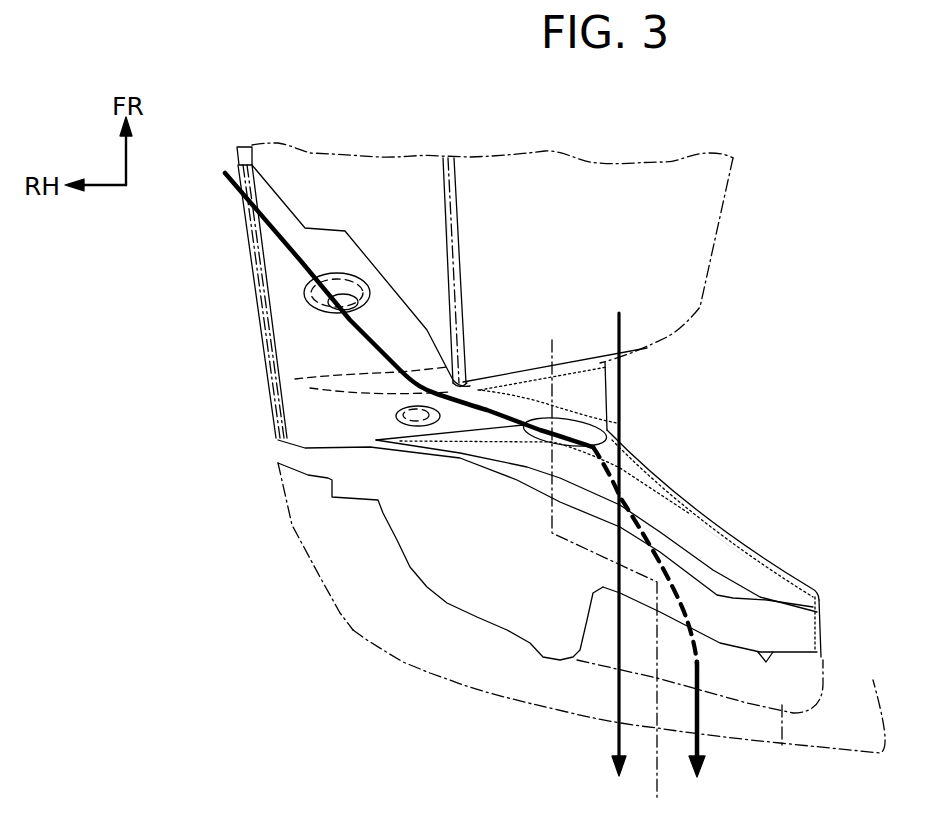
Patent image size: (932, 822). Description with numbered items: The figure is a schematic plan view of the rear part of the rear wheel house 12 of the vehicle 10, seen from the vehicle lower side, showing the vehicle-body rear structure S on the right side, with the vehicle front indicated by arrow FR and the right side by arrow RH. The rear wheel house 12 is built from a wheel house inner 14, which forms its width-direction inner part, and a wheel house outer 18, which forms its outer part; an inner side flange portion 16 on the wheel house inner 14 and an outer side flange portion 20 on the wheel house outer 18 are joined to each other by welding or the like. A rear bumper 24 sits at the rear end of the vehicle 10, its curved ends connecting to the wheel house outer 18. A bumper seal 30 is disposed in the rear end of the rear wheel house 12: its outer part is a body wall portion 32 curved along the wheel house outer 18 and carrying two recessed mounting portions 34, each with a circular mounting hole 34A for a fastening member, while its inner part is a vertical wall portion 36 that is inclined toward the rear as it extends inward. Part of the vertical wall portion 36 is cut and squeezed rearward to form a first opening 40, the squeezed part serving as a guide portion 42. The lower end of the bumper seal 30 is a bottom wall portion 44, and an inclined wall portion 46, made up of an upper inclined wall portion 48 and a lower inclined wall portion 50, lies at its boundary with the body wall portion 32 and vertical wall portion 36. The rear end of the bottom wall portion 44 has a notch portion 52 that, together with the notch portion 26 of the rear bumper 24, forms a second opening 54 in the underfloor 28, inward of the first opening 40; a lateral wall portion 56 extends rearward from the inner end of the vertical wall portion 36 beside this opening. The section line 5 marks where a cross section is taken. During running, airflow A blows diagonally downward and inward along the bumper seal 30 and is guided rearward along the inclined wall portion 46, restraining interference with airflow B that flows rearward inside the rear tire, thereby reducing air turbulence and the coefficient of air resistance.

The vehicle 10 is at (864, 178).
The rear wheel house 12 is at (370, 128).
The wheel house inner 14 is at (486, 181).
The inner side flange portion 16 is at (462, 213).
The wheel house outer 18 is at (384, 181).
The outer side flange portion 20 is at (440, 212).
The rear bumper 24 is at (353, 630).
The notch portion 26 is at (783, 745).
The underfloor 28 is at (368, 561).
The bumper seal 30 is at (262, 323).
The body wall portion 32 is at (272, 253).
The mounting portion 34 is at (358, 284).
The mounting hole 34A is at (332, 312).
The vertical wall portion 36 is at (697, 513).
The first opening 40 is at (523, 432).
The guide portion 42 is at (583, 423).
The bottom wall portion 44 is at (490, 570).
The inclined wall portion 46 is at (745, 497).
The upper inclined wall portion 48 is at (745, 558).
The lower inclined wall portion 50 is at (757, 593).
The notch portion 52 is at (770, 652).
The second opening 54 is at (823, 661).
The lateral wall portion 56 is at (827, 628).
The section line of FIG. 5 is at (552, 347).
The airflow A is at (703, 720).
The airflow B is at (619, 690).
The vehicle-body rear structure S is at (371, 688).